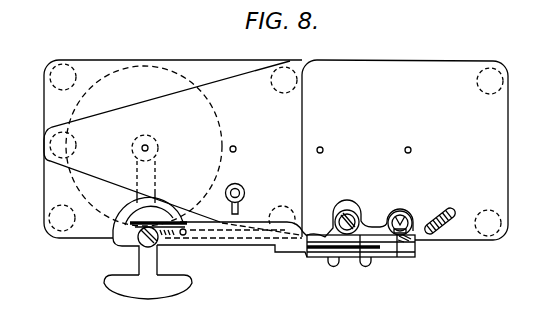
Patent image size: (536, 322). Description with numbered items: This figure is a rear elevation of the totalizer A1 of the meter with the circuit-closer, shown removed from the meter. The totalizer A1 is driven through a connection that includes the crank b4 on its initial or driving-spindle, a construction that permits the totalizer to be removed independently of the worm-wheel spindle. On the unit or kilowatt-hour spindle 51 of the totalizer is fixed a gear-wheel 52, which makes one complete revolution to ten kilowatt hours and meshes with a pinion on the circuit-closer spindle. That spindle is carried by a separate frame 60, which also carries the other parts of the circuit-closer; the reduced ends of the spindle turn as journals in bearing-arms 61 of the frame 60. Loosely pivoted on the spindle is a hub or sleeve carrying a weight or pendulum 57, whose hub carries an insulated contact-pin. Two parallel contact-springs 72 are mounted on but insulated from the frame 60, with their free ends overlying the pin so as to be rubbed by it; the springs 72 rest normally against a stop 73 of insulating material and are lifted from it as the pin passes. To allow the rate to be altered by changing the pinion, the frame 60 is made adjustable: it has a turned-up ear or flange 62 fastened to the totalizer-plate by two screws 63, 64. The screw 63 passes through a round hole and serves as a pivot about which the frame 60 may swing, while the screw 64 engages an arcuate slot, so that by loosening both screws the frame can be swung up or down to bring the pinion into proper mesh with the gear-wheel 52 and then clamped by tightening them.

The unit spindle 51 is at (142, 147).
The gear-wheel 52 is at (122, 64).
The weight 57 is at (148, 248).
The frame 60 is at (297, 253).
The bearing-arms 61 is at (235, 238).
The ear 62 is at (354, 210).
The screw 63 is at (409, 212).
The screw 64 is at (336, 222).
The contact-springs 72 is at (167, 141).
The stop 73 is at (184, 236).
The totalizer A1 is at (351, 150).
The crank b4 is at (248, 200).